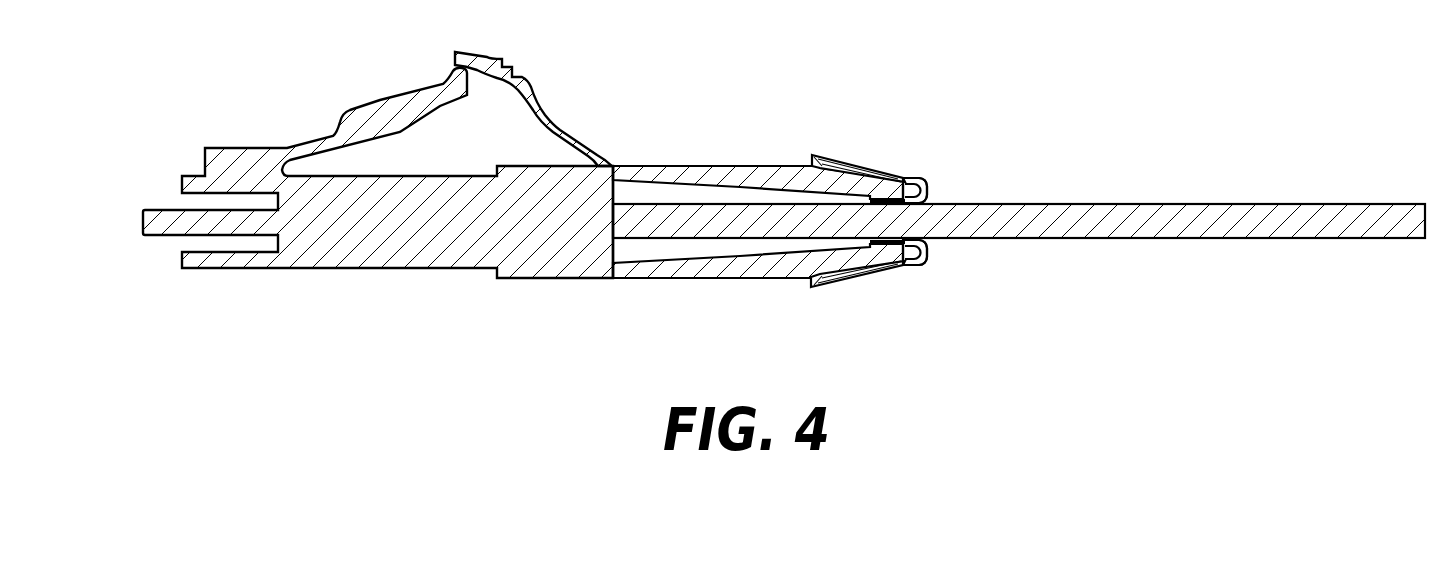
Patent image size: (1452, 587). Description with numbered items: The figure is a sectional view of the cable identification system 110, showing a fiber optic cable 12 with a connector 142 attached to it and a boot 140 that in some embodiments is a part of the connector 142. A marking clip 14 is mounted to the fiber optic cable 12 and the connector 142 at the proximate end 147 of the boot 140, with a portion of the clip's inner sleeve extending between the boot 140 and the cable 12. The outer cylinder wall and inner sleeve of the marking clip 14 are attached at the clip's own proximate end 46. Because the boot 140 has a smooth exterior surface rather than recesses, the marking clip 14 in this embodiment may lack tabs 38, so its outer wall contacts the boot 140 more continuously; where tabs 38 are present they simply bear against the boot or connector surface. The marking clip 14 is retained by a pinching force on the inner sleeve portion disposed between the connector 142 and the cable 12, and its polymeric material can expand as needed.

The cable identification system 110 is at (853, 73).
The connector 142 is at (630, 172).
The boot 140 is at (764, 175).
The fiber optic cable 12 is at (1173, 227).
The tabs 38 is at (852, 170).
The marking clip 14 is at (890, 176).
The proximate end 147 is at (907, 178).
The proximate end 46 is at (930, 185).